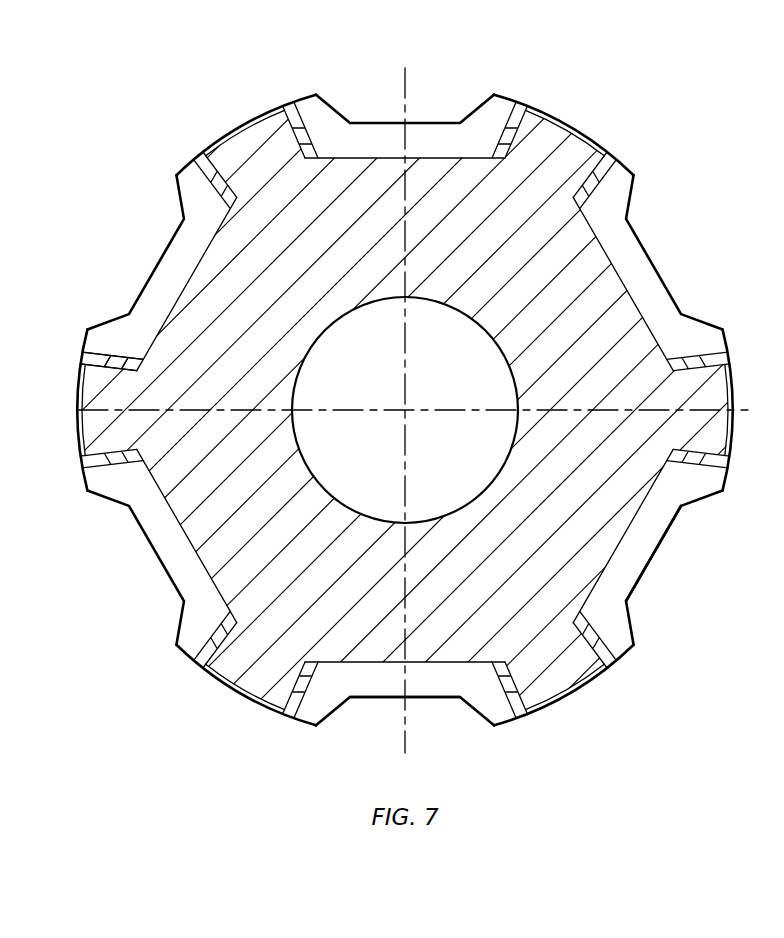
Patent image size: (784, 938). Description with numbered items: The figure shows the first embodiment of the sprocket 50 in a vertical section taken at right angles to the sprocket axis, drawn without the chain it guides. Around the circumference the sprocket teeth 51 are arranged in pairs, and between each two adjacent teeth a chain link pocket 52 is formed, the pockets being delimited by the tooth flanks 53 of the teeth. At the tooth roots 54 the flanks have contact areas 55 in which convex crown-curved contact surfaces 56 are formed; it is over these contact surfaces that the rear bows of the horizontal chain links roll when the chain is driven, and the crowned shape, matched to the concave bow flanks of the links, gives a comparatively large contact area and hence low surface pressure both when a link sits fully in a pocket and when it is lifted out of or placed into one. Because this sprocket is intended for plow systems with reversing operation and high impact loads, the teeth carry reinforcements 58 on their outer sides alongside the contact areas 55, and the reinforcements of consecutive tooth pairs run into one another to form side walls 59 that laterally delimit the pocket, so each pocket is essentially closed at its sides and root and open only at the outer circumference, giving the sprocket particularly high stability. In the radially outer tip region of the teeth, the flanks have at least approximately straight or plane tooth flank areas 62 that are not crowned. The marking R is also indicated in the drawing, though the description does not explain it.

The sprocket 50 is at (236, 278).
The sprocket teeth 51 is at (250, 142).
The chain link pockets 52 is at (428, 114).
The tooth flanks 53 is at (608, 167).
The tooth roots 54 is at (107, 376).
The contact areas 55 is at (313, 133).
The contact surfaces 56 is at (117, 490).
The reinforcements 58 is at (617, 630).
The side walls 59 is at (640, 548).
The tooth flank areas 62 is at (513, 112).
The radius R is at (197, 165).